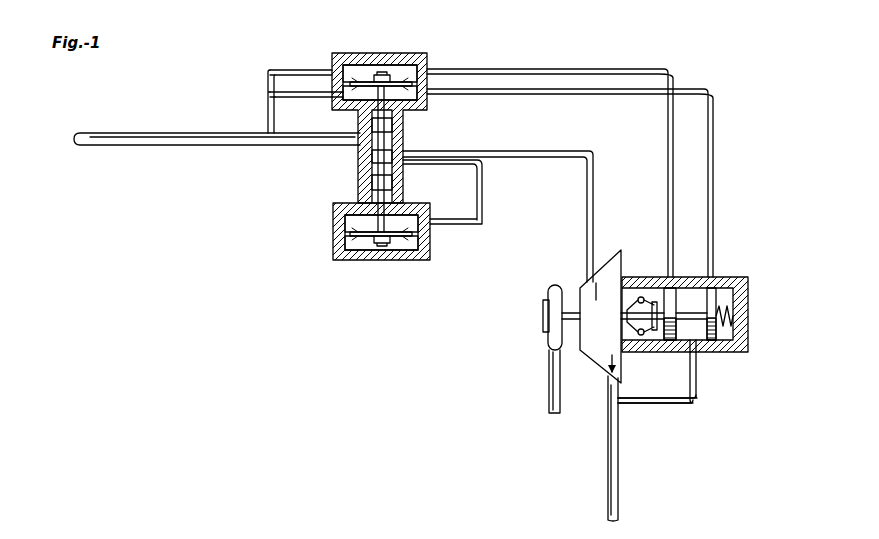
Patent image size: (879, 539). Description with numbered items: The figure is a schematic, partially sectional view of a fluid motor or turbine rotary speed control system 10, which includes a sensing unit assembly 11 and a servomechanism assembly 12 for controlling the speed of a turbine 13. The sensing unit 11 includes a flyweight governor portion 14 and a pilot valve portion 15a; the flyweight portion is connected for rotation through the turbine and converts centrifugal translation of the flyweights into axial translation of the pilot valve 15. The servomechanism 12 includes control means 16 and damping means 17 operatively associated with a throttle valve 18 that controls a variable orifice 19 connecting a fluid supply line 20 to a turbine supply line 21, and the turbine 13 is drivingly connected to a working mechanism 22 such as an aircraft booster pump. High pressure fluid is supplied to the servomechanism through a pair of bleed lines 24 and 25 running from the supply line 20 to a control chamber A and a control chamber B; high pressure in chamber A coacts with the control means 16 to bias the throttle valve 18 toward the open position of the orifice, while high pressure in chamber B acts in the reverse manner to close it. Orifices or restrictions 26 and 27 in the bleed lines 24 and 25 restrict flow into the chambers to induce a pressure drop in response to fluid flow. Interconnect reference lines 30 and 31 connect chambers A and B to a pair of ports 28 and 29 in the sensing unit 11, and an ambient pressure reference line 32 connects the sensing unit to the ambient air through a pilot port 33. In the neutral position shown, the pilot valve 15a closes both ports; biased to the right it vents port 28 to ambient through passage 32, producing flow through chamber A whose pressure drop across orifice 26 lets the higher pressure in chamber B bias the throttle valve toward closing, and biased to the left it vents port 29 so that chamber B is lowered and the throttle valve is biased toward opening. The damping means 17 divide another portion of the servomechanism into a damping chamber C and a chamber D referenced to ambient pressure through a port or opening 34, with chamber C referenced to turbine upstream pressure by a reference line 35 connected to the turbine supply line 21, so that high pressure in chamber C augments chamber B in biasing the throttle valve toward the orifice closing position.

The turbine rotary speed control system 10 is at (677, 52).
The sensing unit assembly 11 is at (750, 340).
The servomechanism assembly 12 is at (416, 50).
The turbine 13 is at (606, 266).
The flyweight governor portion 14 is at (645, 294).
The pilot valve 15 is at (722, 332).
The pilot valve portion 15a is at (657, 388).
The control means 16 is at (358, 74).
The damping means 17 is at (402, 243).
The throttle valve 18 is at (389, 112).
The variable orifice 19 is at (374, 141).
The fluid supply line 20 is at (225, 136).
The turbine supply line 21 is at (590, 182).
The working mechanism 22 is at (552, 294).
The bleed line 24 is at (322, 97).
The bleed line 25 is at (320, 70).
The orifice 26 is at (292, 97).
The orifice 27 is at (291, 70).
The port 28 is at (713, 277).
The port 29 is at (677, 278).
The interconnect reference line 30 is at (713, 140).
The interconnect reference line 31 is at (672, 162).
The ambient pressure reference line 32 is at (698, 385).
The pilot port 33 is at (689, 350).
The port 34 is at (362, 258).
The reference line 35 is at (483, 201).
The control chamber A is at (409, 96).
The control chamber B is at (410, 68).
The damping chamber C is at (406, 230).
The chamber D is at (355, 244).